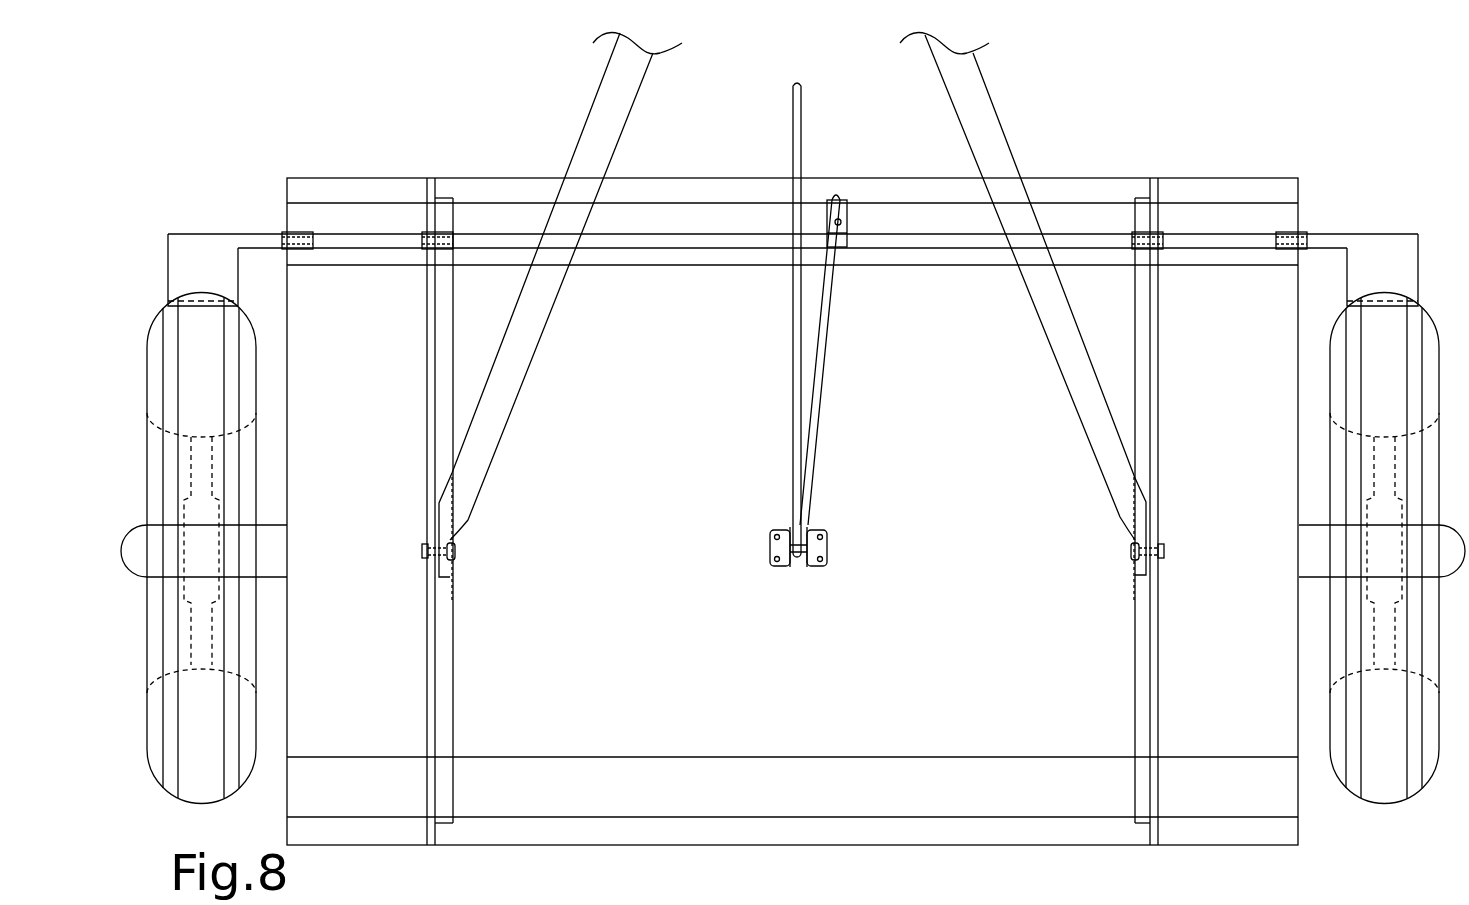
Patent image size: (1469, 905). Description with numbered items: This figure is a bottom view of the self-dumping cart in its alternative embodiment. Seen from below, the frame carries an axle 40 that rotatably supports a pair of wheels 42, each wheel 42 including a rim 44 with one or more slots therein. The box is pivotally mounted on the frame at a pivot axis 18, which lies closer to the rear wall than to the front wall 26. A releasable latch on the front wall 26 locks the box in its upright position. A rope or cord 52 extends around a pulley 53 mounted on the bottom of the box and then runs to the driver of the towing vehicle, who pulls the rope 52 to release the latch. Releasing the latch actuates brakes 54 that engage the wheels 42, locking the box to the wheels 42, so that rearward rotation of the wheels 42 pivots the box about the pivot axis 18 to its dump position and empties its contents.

The pivot axis 18 is at (448, 542).
The front wall 26 is at (1230, 180).
The axle 40 is at (275, 532).
The wheels 42 is at (208, 795).
The rim 44 is at (213, 455).
The rope or cord 52 is at (812, 410).
The pulley 53 is at (780, 528).
The brakes 54 is at (178, 277).